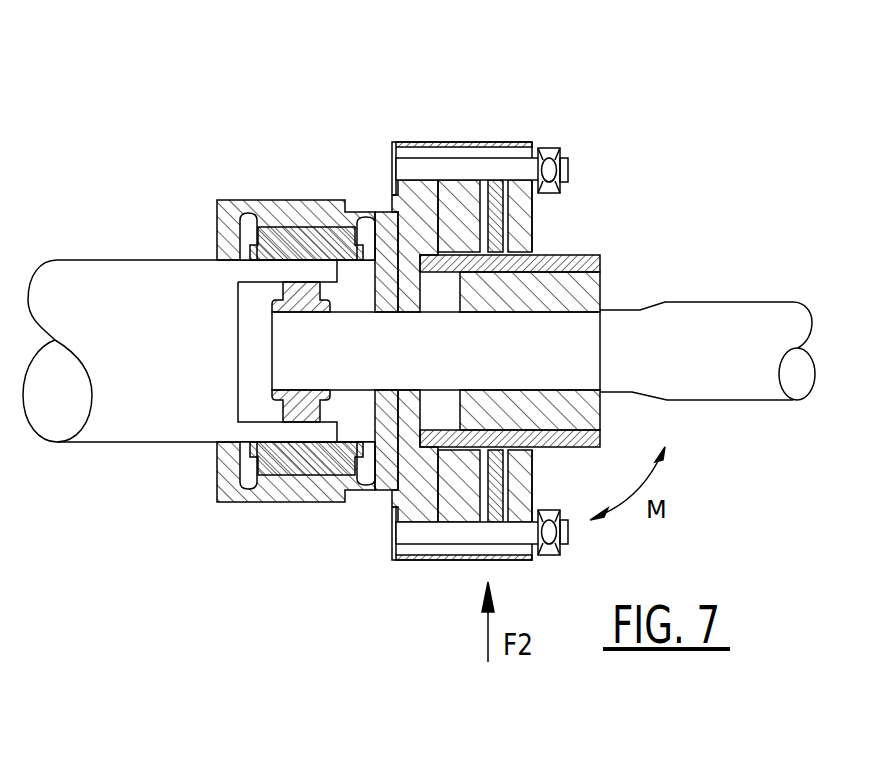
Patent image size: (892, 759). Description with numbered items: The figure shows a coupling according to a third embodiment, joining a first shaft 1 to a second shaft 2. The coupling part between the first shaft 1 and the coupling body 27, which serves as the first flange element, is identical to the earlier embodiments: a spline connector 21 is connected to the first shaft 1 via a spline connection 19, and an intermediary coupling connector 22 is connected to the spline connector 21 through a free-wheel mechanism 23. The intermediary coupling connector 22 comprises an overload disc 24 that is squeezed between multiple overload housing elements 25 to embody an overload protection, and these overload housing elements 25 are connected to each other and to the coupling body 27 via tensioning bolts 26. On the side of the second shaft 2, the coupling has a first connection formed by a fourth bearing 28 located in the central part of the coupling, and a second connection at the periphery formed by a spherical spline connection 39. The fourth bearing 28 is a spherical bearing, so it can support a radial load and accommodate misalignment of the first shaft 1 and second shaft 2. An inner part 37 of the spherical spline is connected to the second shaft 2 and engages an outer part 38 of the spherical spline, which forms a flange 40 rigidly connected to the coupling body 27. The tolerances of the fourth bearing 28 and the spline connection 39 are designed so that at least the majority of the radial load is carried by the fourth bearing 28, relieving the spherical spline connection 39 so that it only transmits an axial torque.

The first shaft 1 is at (734, 388).
The second shaft 2 is at (143, 425).
The spline connection 19 is at (600, 304).
The spline connector 21 is at (597, 413).
The intermediary coupling connector 22 is at (570, 256).
The free-wheel mechanism 23 is at (614, 274).
The overload disc 24 is at (494, 200).
The overload housing elements 25 is at (458, 197).
The tensioning bolts 26 is at (441, 170).
The coupling body 27 is at (427, 552).
The fourth bearing 28 is at (297, 297).
The inner part of spherical spline 37 is at (300, 237).
The outer part of spherical spline 38 is at (227, 212).
The spherical spline connection 39 is at (325, 478).
The flange 40 is at (400, 458).